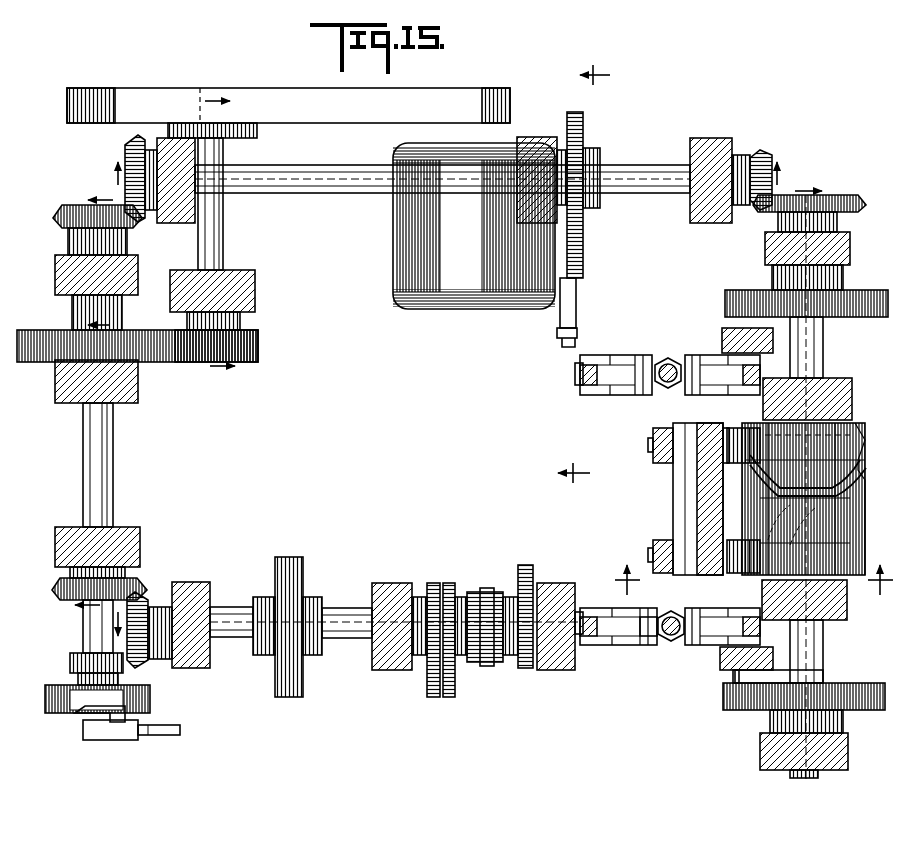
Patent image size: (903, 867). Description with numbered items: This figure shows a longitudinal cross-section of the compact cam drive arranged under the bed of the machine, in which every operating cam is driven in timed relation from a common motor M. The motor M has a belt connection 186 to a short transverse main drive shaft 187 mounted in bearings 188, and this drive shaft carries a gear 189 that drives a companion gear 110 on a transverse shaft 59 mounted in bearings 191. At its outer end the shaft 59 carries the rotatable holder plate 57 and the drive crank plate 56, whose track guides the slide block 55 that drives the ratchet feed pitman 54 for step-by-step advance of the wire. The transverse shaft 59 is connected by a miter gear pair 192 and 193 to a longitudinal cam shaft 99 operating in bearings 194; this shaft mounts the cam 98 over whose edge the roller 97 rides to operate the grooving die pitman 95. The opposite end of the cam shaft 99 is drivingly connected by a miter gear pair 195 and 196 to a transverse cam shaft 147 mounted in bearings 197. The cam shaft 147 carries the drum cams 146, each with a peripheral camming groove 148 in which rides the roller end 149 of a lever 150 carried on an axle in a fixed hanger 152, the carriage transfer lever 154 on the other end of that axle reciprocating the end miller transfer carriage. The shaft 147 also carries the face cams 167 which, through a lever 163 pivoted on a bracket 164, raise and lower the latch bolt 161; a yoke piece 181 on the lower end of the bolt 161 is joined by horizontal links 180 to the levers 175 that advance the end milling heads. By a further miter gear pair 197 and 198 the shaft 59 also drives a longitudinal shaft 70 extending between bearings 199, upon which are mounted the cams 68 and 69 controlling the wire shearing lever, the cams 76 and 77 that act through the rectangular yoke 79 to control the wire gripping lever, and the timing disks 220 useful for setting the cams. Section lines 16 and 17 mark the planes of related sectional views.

The belt connection 186 is at (270, 92).
The bearings 188 is at (257, 132).
The main drive shaft 187 is at (223, 232).
The bearings 194 is at (176, 222).
The miter gear 193 is at (125, 154).
The miter gear 192 is at (64, 205).
The bearings 191 is at (55, 262).
The companion gear 110 is at (40, 332).
The gear 189 is at (258, 347).
The transverse shaft 59 is at (113, 465).
The bearings 197 is at (52, 600).
The miter gear 198 is at (145, 592).
The bearings 199 is at (200, 582).
The timing disks 220 is at (290, 557).
The cam shaft 70 is at (345, 606).
The cam 77 is at (430, 694).
The cam 76 is at (449, 700).
The rectangular yoke 79 is at (461, 660).
The cam 68 is at (494, 592).
The cam 69 is at (526, 670).
The cam shaft 99 is at (355, 193).
The motor M is at (478, 300).
The cam 98 is at (583, 236).
The roller 97 is at (583, 261).
The pitman 95 is at (557, 346).
The miter gear 195 is at (766, 152).
The miter gear 196 is at (842, 196).
The transverse cam shaft 147 is at (823, 346).
The face cam 167 is at (744, 290).
The lever 175 is at (590, 608).
The links 180 is at (612, 646).
The latch bolt 161 is at (670, 612).
The yoke piece 181 is at (646, 637).
The bracket 164 is at (722, 658).
The lever 163 is at (722, 676).
The hanger 152 is at (705, 522).
The carriage transfer lever 154 is at (655, 438).
The cam 146 is at (755, 492).
The camming groove 148 is at (752, 476).
The roller end 149 is at (756, 448).
The lever 150 is at (730, 445).
The holder plate 57 is at (70, 662).
The plate 56 is at (45, 700).
The slide block 55 is at (90, 718).
The pitman 54 is at (166, 736).
The section line 17 is at (592, 277).
The section line 16 is at (746, 587).